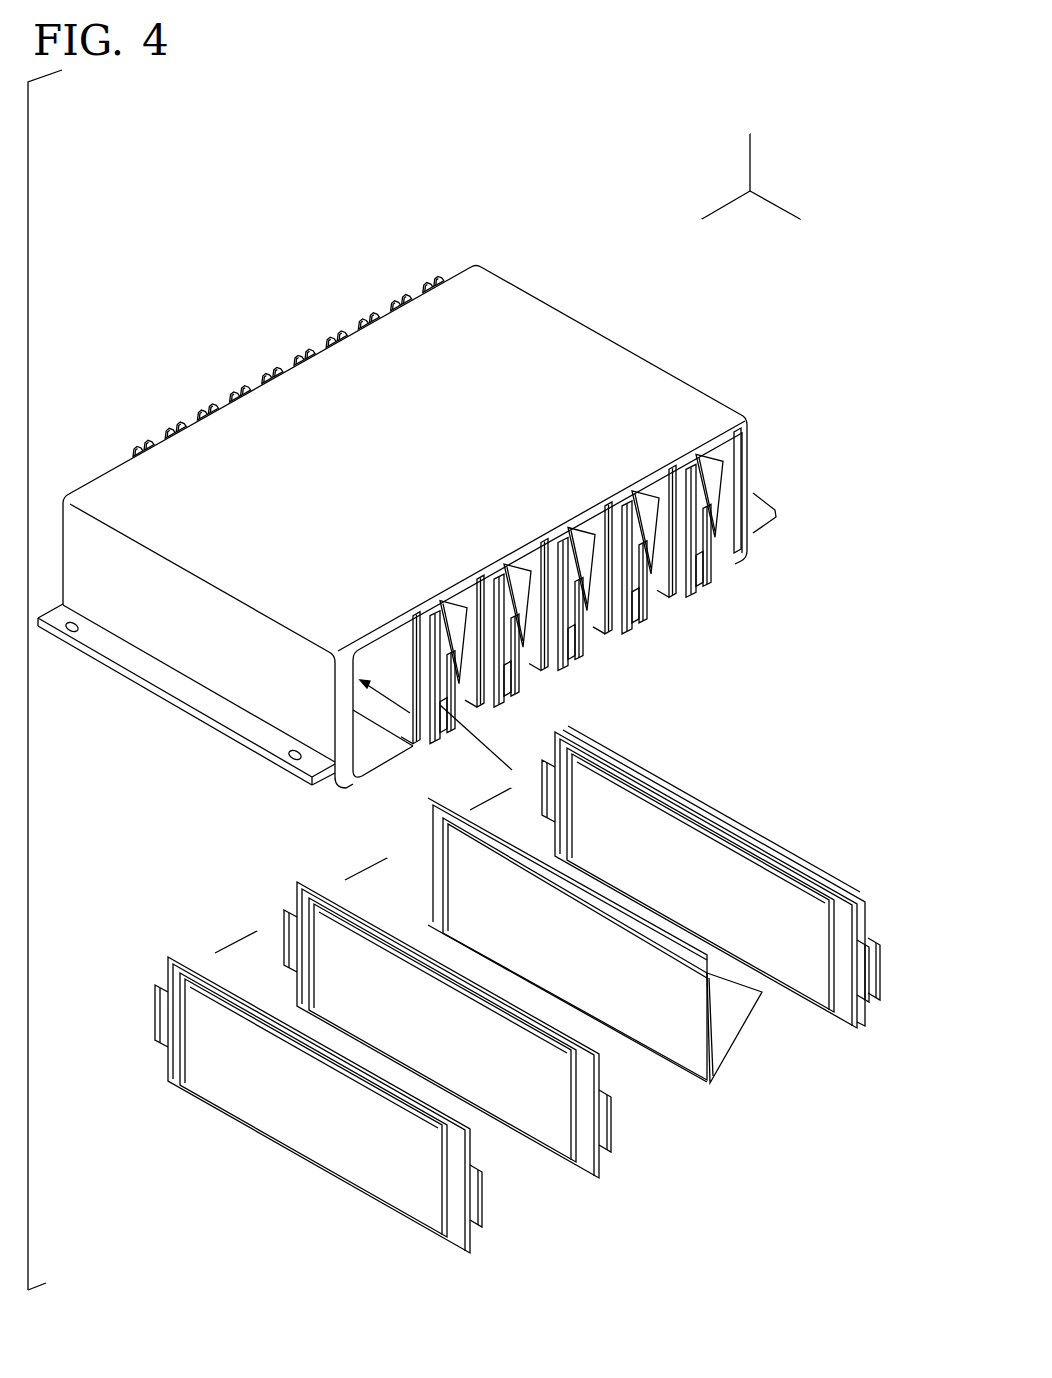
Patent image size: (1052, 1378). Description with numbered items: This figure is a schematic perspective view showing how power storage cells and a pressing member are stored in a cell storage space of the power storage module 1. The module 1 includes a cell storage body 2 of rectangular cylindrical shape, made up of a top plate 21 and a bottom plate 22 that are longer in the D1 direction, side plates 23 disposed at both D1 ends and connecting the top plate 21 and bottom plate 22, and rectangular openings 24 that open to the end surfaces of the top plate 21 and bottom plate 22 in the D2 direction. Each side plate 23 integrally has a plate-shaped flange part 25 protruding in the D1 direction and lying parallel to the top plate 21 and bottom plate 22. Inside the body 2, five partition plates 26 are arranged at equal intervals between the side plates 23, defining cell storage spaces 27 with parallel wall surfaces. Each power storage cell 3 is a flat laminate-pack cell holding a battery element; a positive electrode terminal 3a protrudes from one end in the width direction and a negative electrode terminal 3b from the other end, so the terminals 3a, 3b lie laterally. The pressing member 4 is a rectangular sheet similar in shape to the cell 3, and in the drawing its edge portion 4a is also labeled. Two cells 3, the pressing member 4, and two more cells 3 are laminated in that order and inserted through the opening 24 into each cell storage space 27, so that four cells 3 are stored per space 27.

The power storage module 1 is at (219, 268).
The cell storage body 2 is at (613, 343).
The power storage cell 3 is at (335, 1150).
The positive electrode terminal 3a is at (449, 720).
The negative electrode terminal 3b is at (156, 1005).
The pressing member 4 is at (690, 1052).
The fin portion of heat transfer plate 4a is at (727, 1020).
The top plate 21 is at (387, 340).
The bottom plate 22 is at (345, 790).
The side plate 23 is at (253, 703).
The rectangular opening 24 is at (748, 440).
The flange part 25 is at (140, 688).
The partition plate 26 is at (416, 615).
The cell storage space 27 is at (365, 736).